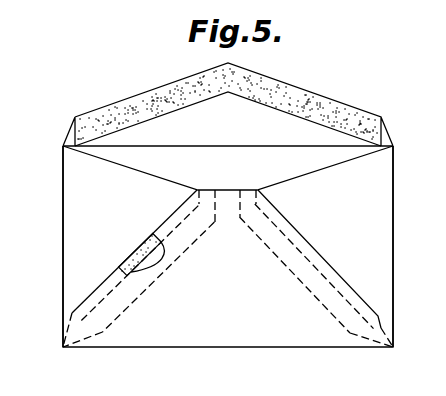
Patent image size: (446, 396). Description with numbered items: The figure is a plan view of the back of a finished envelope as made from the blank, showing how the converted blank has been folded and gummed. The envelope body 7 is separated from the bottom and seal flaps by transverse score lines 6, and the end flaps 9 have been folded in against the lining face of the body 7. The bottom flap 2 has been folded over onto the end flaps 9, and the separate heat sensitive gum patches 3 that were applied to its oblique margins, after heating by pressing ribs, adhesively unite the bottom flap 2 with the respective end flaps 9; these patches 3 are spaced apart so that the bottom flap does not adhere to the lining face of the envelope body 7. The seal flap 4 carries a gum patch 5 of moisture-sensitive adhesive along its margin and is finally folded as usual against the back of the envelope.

The bottom flap 2 is at (238, 333).
The gum patches 3 is at (140, 253).
The seal flap 4 is at (161, 83).
The gum patch 5 is at (275, 91).
The transverse score lines 6 is at (175, 147).
The body 7 is at (217, 160).
The end flaps 9 is at (72, 224).